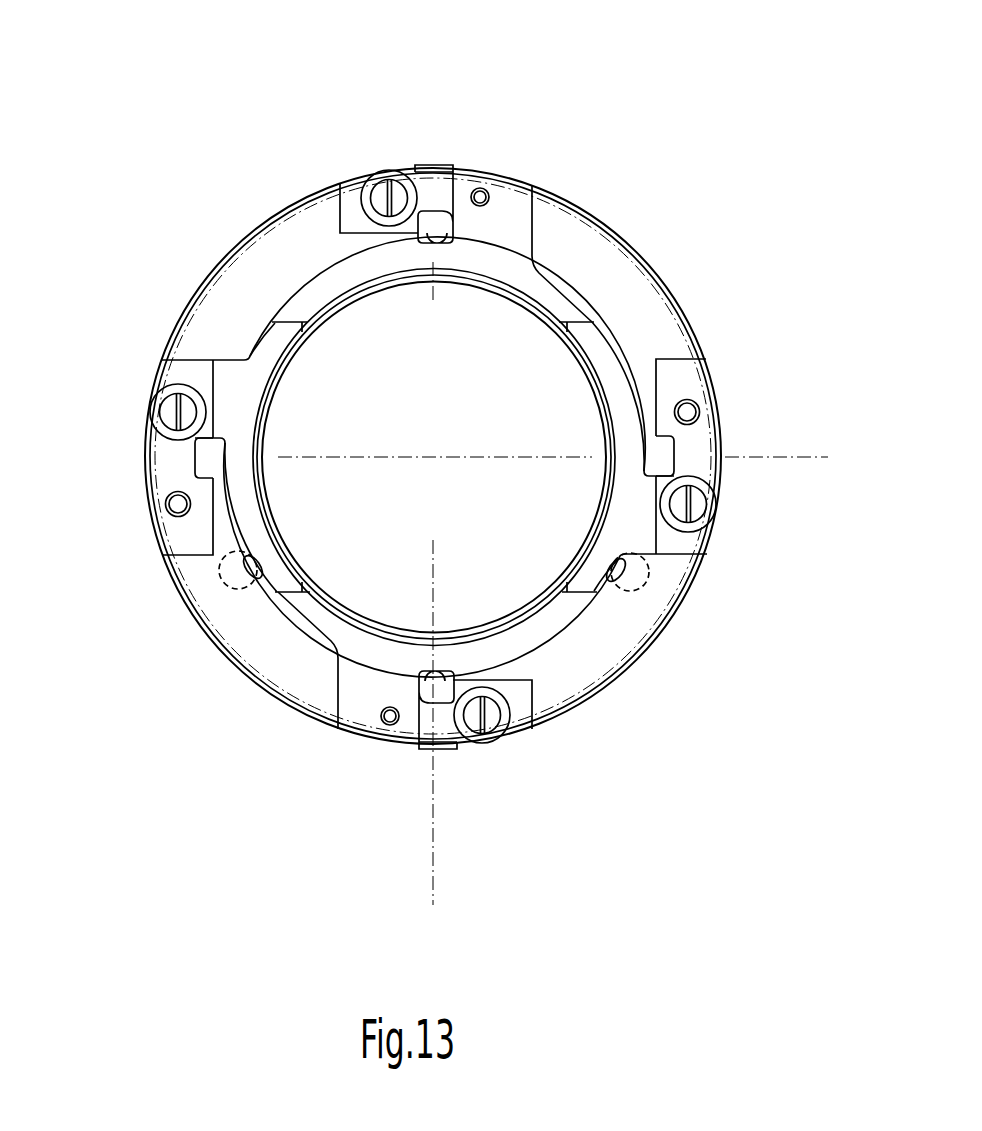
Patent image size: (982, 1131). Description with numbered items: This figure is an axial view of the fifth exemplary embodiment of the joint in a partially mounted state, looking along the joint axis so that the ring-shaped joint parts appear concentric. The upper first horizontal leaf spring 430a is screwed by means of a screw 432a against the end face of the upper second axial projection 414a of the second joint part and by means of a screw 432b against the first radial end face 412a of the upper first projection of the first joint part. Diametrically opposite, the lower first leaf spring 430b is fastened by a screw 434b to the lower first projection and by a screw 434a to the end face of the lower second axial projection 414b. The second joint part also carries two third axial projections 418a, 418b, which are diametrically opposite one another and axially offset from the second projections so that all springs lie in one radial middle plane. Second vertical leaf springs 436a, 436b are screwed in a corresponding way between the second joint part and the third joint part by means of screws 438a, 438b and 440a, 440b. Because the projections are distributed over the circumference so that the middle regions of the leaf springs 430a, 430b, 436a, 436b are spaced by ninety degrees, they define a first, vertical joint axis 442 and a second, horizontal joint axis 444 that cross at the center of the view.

The first radial end face 412a is at (347, 180).
The second axial projection 414a is at (510, 210).
The second axial projection 414b is at (362, 703).
The third axial projection 418a is at (233, 373).
The third axial projection 418b is at (636, 535).
The first horizontal leaf spring 430a is at (443, 187).
The first leaf spring 430b is at (433, 717).
The screw 432a is at (482, 188).
The screw 432b is at (400, 180).
The screw 434a is at (393, 720).
The screw 434b is at (492, 713).
The second vertical leaf spring 436a is at (168, 468).
The second vertical leaf spring 436b is at (685, 453).
The screw 438a is at (687, 407).
The screw 438b is at (697, 507).
The screw 440a is at (173, 510).
The screw 440b is at (157, 407).
The first, vertical joint axis 442 is at (433, 867).
The second, horizontal joint axis 444 is at (792, 458).